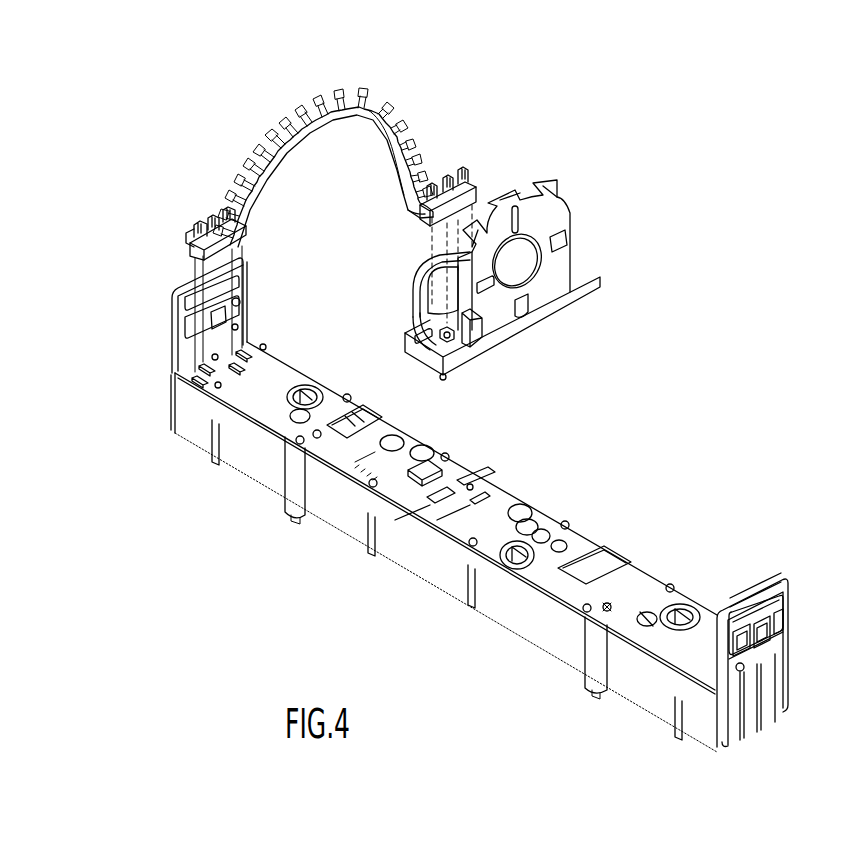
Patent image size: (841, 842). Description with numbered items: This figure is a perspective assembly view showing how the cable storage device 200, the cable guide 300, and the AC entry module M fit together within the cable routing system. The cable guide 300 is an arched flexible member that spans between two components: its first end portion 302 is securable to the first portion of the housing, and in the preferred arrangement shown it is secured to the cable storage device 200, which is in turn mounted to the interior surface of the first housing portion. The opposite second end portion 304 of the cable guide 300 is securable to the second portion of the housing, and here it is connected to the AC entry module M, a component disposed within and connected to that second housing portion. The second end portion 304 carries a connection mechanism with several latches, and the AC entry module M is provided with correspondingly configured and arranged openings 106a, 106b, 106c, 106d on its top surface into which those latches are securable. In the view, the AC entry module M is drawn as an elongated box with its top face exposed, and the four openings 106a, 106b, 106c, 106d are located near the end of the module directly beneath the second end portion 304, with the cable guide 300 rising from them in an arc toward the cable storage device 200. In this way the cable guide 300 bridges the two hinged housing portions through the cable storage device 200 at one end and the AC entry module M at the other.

The AC entry module M is at (548, 489).
The opening 106a is at (203, 374).
The opening 106b is at (210, 367).
The opening 106c is at (238, 366).
The opening 106d is at (246, 350).
The cable storage device 200 is at (577, 218).
The cable guide 300 is at (286, 104).
The first end portion 302 is at (478, 177).
The second end portion 304 is at (200, 216).